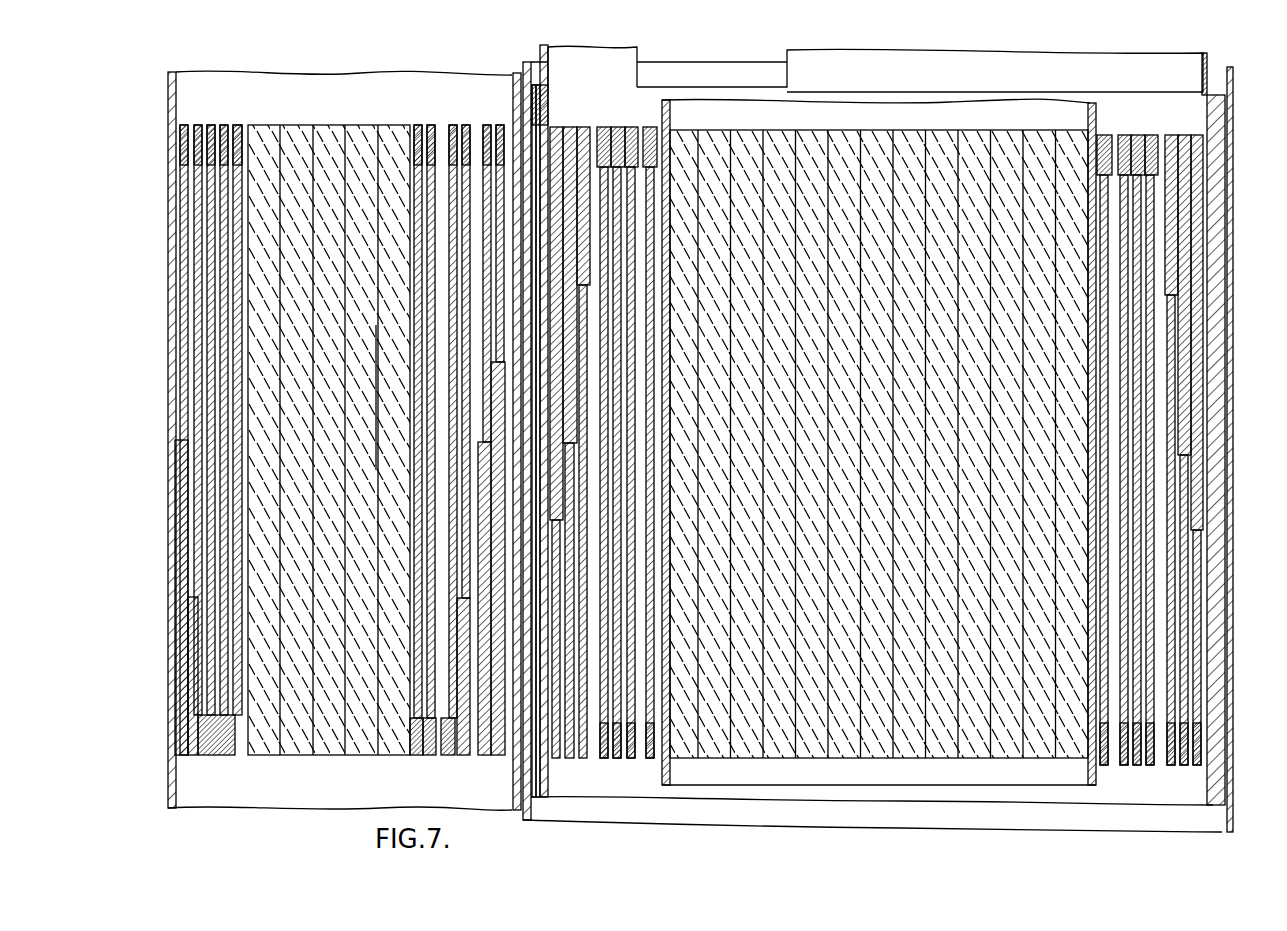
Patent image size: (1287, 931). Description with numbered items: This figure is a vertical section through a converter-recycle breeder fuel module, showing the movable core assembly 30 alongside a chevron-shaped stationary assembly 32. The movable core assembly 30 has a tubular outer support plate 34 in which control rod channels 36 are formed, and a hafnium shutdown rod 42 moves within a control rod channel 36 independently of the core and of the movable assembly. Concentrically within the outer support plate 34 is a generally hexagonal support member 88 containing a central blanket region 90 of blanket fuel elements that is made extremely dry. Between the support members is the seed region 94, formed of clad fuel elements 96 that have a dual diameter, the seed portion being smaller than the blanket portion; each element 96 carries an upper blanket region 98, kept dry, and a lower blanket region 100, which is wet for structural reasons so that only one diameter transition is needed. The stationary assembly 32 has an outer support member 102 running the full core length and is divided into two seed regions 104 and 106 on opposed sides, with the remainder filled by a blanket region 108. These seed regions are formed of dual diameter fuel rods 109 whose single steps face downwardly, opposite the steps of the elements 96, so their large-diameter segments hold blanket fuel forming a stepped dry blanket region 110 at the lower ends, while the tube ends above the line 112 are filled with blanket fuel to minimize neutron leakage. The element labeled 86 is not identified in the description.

The movable core assembly 30 is at (985, 130).
The chevron-shaped stationary assembly 32 is at (318, 756).
The tubular outer support plate 34 is at (538, 791).
The control rod channel 36 is at (528, 797).
The shutdown rod 42 is at (1208, 58).
The side frame bar 86 is at (1226, 416).
The hexagonal support member 88 is at (659, 432).
The blanket region 90 is at (897, 130).
The seed region 94 is at (633, 473).
The clad fuel element 96 is at (632, 376).
The upper blanket region 98 is at (609, 112).
The lower blanket region 100 is at (470, 759).
The outer support member 102 is at (173, 200).
The seed region 104 is at (201, 253).
The seed region 106 is at (448, 300).
The blanket region 108 is at (371, 110).
The dual diameter fuel rod 109 is at (192, 410).
The dry blanket region 110 is at (243, 786).
The line 112 is at (197, 162).